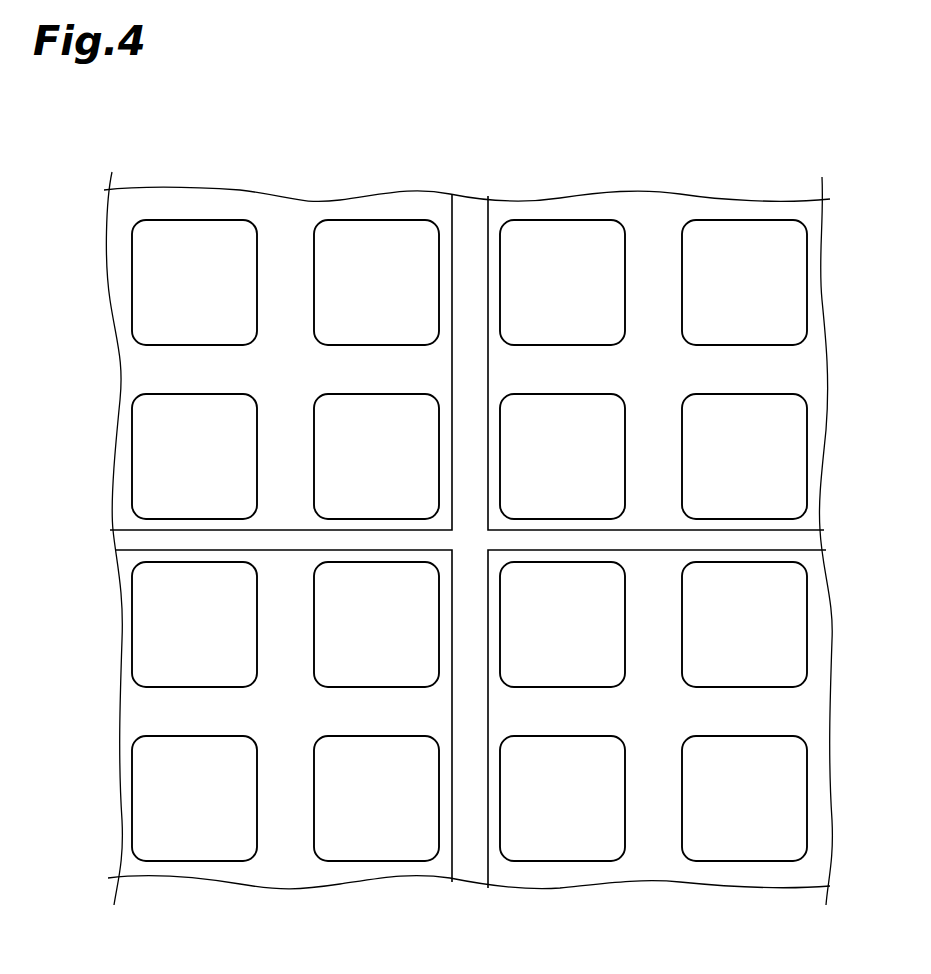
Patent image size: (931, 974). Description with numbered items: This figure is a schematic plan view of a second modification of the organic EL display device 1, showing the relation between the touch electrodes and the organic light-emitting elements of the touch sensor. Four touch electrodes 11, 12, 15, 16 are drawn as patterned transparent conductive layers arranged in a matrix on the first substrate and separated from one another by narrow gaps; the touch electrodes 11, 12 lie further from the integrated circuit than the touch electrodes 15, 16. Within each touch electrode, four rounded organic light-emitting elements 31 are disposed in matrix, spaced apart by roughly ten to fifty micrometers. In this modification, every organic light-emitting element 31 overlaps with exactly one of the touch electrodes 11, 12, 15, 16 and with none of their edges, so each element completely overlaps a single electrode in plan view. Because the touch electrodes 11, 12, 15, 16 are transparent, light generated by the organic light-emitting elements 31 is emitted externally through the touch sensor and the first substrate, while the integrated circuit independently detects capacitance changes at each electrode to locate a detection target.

The organic EL display device 1 is at (779, 145).
The touch electrode 11 is at (457, 235).
The touch electrode 12 is at (483, 230).
The touch electrode 15 is at (457, 850).
The touch electrode 16 is at (483, 850).
The organic light-emitting element 31 is at (195, 238).